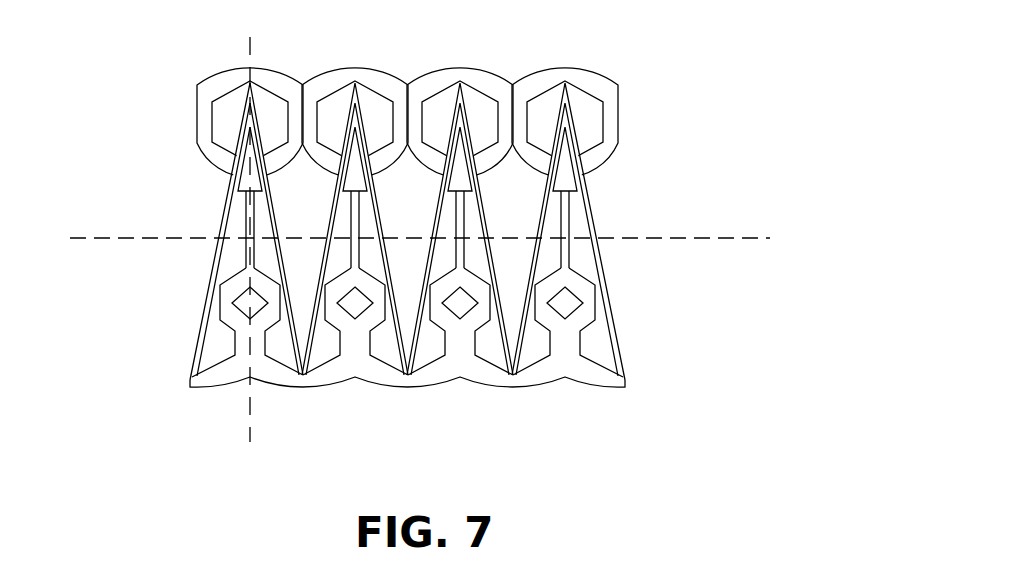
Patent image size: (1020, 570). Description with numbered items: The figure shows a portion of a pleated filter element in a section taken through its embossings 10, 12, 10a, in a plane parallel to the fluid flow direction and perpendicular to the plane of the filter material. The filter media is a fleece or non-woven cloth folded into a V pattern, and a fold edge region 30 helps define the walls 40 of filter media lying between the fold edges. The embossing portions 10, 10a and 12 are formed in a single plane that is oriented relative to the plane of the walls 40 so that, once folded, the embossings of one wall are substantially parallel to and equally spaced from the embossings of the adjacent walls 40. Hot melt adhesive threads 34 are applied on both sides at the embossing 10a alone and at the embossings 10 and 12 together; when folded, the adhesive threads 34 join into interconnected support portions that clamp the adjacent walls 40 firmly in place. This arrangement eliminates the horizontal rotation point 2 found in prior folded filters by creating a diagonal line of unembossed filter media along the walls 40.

The rotation point 2 is at (419, 243).
The embossing 10 is at (582, 342).
The embossing 10a is at (610, 123).
The embossing 12 is at (570, 225).
The fold edge region 30 is at (269, 250).
The hot melt adhesive threads 34 is at (411, 80).
The walls 40 is at (192, 372).